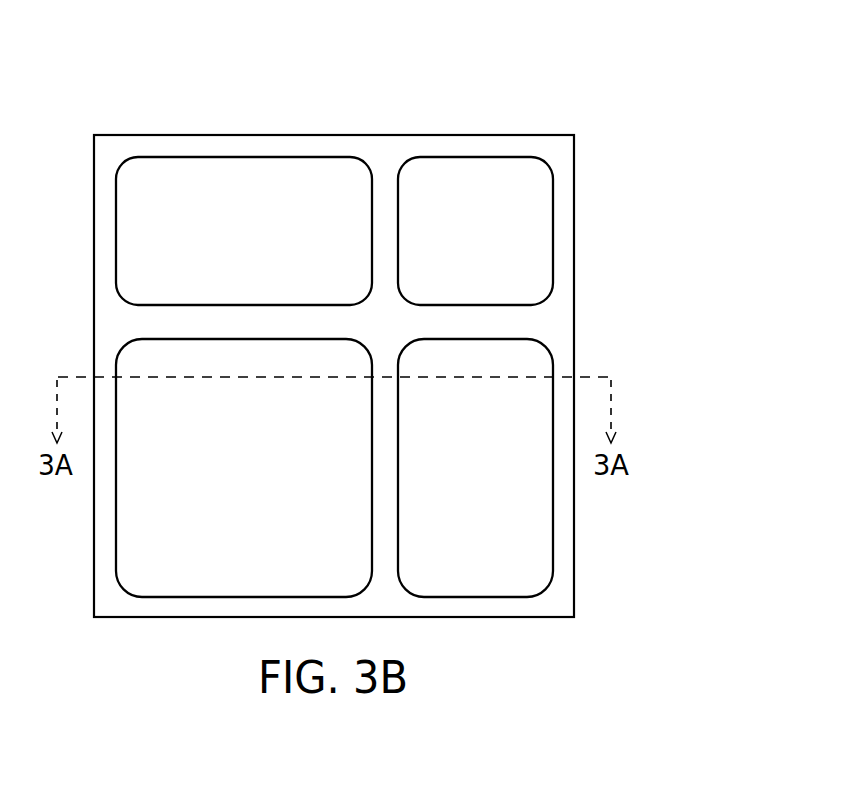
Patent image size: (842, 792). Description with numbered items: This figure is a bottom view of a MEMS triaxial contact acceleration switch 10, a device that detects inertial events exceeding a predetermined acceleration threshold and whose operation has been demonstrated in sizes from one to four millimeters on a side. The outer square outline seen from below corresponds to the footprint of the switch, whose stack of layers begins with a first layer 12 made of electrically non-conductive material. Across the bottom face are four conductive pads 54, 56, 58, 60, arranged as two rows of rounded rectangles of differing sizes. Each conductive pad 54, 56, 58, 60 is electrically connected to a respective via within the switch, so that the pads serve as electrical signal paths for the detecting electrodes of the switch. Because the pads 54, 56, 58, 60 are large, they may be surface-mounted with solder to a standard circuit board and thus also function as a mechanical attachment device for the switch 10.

The MEMS triaxial contact acceleration switch 10 is at (623, 90).
The first layer 12 is at (560, 320).
The conductive pad 54 is at (496, 249).
The conductive pad 56 is at (489, 481).
The conductive pad 58 is at (261, 481).
The conductive pad 60 is at (266, 249).